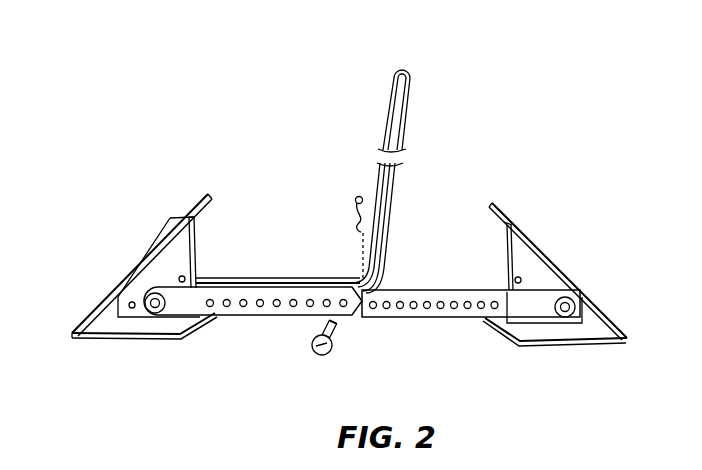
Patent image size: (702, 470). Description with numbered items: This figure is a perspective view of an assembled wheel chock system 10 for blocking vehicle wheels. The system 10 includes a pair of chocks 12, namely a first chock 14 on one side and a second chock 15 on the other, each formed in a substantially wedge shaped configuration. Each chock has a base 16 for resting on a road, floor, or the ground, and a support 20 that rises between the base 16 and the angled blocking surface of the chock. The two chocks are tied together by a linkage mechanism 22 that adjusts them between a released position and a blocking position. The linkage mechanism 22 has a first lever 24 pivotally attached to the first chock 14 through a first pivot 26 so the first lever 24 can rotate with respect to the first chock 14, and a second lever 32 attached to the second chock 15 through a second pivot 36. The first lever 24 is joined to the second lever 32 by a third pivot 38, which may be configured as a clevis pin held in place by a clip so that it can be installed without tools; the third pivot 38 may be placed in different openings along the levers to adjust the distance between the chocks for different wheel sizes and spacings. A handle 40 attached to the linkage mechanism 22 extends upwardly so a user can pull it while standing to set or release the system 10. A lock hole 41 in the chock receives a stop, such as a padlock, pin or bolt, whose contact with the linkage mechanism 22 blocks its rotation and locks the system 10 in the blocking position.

The wheel chock system 10 is at (501, 78).
The chocks 12 is at (545, 238).
The first chock 14 is at (110, 292).
The second chock 15 is at (587, 292).
The base 16 is at (144, 326).
The support 20 is at (195, 245).
The linkage mechanism 22 is at (382, 318).
The first lever 24 is at (243, 317).
The first pivot 26 is at (148, 309).
The second lever 32 is at (438, 318).
The second pivot 36 is at (576, 306).
The third pivot 38 is at (312, 347).
The handle 40 is at (412, 112).
The lock hole 41 is at (196, 276).